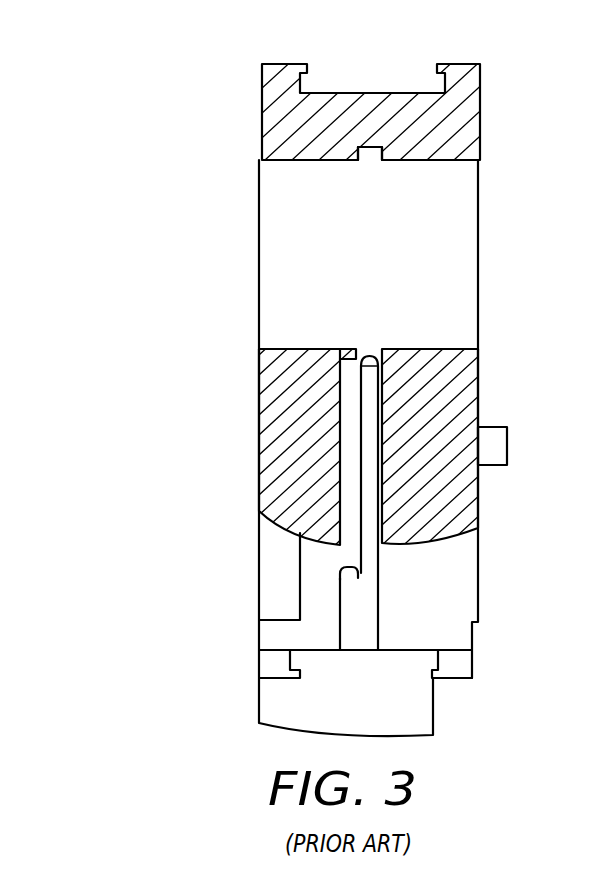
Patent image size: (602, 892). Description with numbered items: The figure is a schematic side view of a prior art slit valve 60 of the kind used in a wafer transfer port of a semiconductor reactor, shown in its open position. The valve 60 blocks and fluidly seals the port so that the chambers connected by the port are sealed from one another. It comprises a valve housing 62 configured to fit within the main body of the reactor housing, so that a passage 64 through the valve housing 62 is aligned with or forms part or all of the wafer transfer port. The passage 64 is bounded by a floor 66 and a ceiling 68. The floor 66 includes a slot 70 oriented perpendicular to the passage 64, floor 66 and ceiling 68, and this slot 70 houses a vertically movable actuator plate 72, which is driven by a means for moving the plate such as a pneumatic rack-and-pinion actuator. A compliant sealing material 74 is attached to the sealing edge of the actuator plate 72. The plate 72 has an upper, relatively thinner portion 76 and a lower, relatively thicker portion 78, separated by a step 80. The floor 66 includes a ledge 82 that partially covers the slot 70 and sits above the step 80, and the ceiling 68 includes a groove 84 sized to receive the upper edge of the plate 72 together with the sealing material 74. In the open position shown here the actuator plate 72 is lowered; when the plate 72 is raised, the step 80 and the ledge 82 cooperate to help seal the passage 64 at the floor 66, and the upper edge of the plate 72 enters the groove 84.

The slit valve 60 is at (157, 146).
The valve housing 62 is at (470, 132).
The passage 64 is at (428, 187).
The floor 66 is at (413, 348).
The ceiling 68 is at (276, 162).
The slot 70 is at (345, 440).
The actuator plate 72 is at (384, 567).
The compliant sealing material 74 is at (371, 354).
The upper portion 76 is at (370, 472).
The lower portion 78 is at (360, 614).
The step 80 is at (350, 566).
The ledge 82 is at (347, 349).
The groove 84 is at (370, 160).